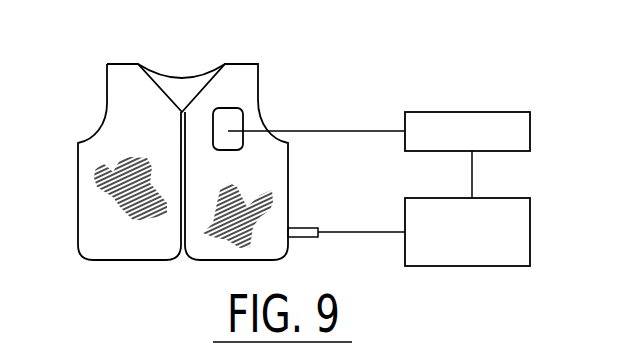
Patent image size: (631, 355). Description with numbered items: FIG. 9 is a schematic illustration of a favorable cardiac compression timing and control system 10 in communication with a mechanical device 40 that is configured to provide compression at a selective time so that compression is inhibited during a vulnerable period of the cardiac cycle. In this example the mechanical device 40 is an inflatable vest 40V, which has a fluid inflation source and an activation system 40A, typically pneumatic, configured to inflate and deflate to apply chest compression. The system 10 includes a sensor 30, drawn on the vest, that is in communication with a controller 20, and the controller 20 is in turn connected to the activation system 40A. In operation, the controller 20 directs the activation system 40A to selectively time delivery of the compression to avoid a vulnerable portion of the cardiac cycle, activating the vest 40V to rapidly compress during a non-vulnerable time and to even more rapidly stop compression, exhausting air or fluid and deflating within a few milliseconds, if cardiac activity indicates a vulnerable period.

The system 10 is at (173, 58).
The controller 20 is at (530, 131).
The sensor 30 is at (235, 117).
The mechanical device 40 is at (110, 252).
The inflatable vest 40V is at (85, 205).
The activation system 40A is at (530, 235).